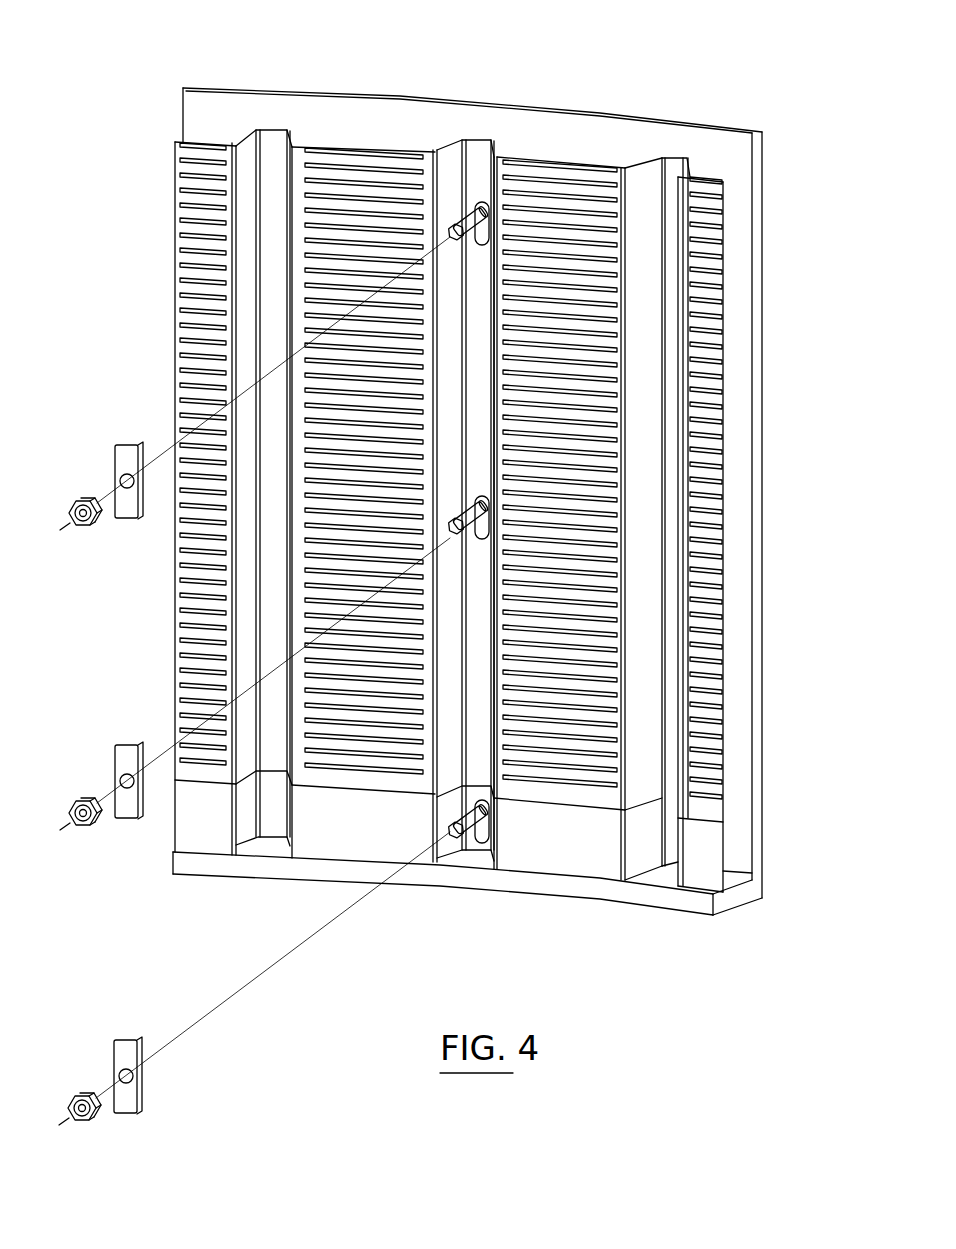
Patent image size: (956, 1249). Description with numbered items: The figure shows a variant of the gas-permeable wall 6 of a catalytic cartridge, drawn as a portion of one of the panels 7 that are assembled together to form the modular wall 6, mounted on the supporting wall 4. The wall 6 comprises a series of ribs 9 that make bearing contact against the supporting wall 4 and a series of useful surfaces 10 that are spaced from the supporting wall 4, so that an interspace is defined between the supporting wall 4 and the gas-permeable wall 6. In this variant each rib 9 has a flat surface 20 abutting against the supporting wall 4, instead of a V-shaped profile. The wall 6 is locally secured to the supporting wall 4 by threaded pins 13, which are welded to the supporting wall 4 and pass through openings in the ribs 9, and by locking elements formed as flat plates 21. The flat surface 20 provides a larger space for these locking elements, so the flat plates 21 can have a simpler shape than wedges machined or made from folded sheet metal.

The supporting wall 4 is at (738, 318).
The gas-permeable wall 6 is at (496, 501).
The panel 7 is at (562, 845).
The rib 9 is at (453, 160).
The useful surface 10 is at (573, 177).
The threaded pin 13 is at (467, 217).
The flat surface 20 is at (483, 152).
The flat plate 21 is at (127, 462).